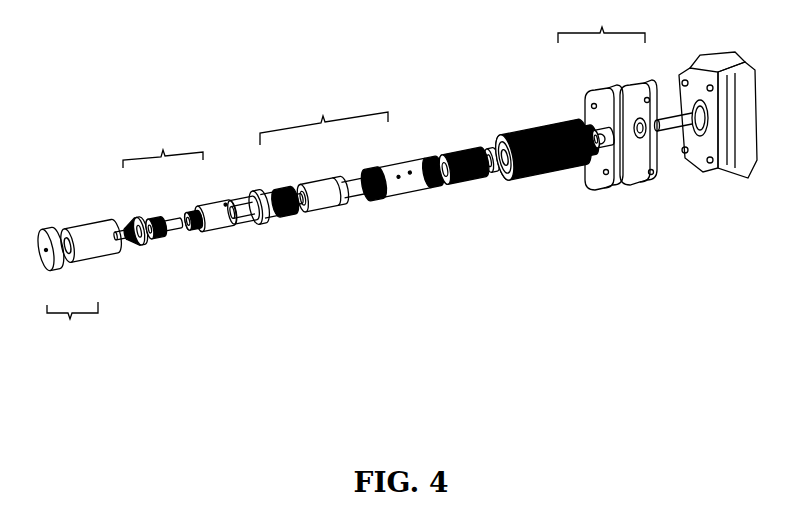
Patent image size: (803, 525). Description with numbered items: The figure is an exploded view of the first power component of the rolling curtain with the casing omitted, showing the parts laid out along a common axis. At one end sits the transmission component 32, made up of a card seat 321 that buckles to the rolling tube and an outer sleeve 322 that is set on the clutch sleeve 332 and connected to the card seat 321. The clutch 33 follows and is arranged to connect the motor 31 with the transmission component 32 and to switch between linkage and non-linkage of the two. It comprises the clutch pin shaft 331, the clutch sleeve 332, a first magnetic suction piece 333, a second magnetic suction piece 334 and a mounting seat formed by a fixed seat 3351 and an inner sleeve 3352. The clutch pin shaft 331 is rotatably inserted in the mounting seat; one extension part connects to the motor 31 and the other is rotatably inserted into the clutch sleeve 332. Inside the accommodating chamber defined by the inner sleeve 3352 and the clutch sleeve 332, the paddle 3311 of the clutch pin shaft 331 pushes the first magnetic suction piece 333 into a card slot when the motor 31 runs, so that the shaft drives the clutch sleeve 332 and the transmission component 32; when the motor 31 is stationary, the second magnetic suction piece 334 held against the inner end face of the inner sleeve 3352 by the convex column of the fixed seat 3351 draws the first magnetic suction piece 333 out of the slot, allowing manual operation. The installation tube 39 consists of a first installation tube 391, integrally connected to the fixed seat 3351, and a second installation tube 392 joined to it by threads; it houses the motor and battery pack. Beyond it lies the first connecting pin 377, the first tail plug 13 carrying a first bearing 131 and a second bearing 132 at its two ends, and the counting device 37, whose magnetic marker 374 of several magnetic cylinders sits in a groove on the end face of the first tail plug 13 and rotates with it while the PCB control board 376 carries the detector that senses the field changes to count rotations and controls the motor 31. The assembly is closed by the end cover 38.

The first tail plug 13 is at (527, 178).
The first bearing 131 is at (497, 147).
The second bearing 132 is at (592, 160).
The motor 31 is at (333, 197).
The transmission component 32 is at (72, 318).
The card seat 321 is at (62, 267).
The outer sleeve 322 is at (90, 255).
The clutch 33 is at (163, 152).
The clutch pin shaft 331 is at (172, 222).
The paddle 3311 is at (152, 237).
The clutch sleeve 332 is at (133, 220).
The first magnetic suction piece 333 is at (172, 233).
The second magnetic suction piece 334 is at (193, 235).
The fixed seat 3351 is at (245, 218).
The inner sleeve 3352 is at (212, 202).
The counting device 37 is at (601, 28).
The magnetic marker 374 is at (587, 123).
The PCB control board 376 is at (655, 100).
The first connecting pin 377 is at (473, 178).
The end cover 38 is at (743, 180).
The installation tube 39 is at (324, 123).
The first installation tube 391 is at (270, 187).
The second installation tube 392 is at (400, 162).